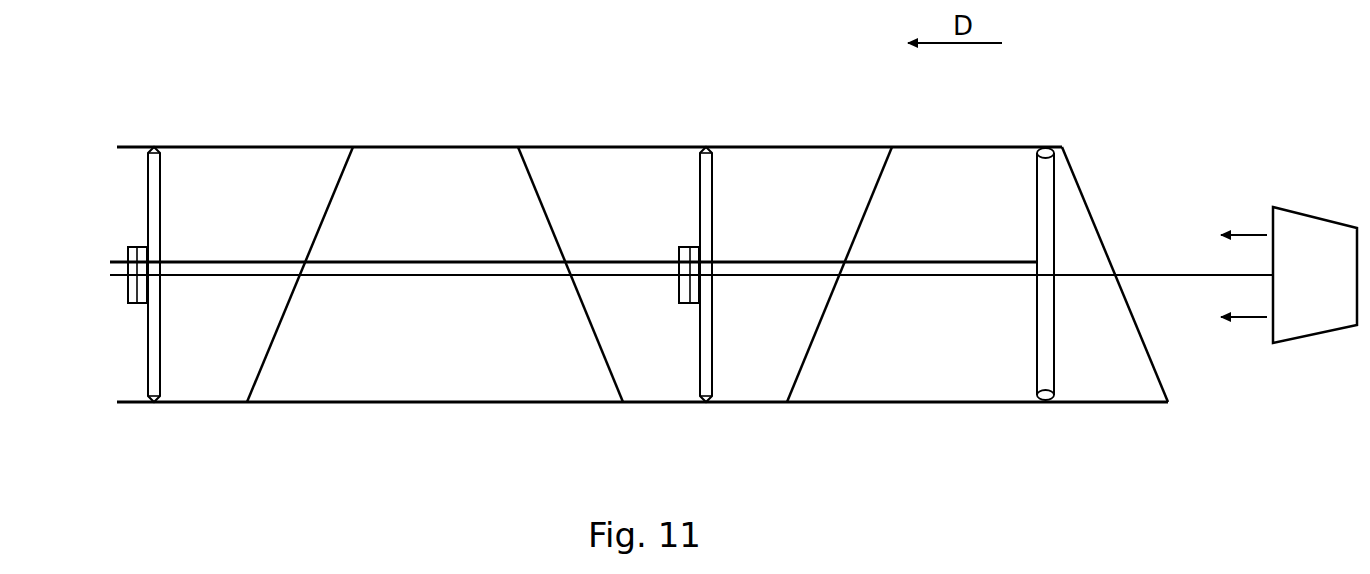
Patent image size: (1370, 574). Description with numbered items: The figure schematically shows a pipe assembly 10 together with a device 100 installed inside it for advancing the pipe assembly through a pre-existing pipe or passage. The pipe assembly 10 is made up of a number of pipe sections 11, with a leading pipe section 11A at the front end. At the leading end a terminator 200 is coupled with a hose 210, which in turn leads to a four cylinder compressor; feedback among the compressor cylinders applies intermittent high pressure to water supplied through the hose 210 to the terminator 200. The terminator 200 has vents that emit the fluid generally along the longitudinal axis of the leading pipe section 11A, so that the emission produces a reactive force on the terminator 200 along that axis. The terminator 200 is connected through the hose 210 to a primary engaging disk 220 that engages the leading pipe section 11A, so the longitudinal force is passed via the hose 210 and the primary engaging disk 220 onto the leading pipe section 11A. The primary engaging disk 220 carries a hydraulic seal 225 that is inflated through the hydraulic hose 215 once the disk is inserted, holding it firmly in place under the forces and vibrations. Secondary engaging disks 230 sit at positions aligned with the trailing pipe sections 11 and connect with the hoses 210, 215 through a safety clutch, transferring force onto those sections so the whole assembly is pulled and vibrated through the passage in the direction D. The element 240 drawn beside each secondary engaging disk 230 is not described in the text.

The pipe assembly 10 is at (408, 127).
The pipe section 11 is at (603, 147).
The leading pipe section 11A is at (1125, 402).
The device 100 is at (1278, 148).
The terminator 200 is at (1320, 215).
The hose 210 is at (925, 278).
The hydraulic hose 215 is at (942, 262).
The primary engaging disk 220 is at (1037, 370).
The hydraulic seal 225 is at (1044, 400).
The secondary engaging disk 230 is at (162, 348).
The clamp 240 is at (132, 235).